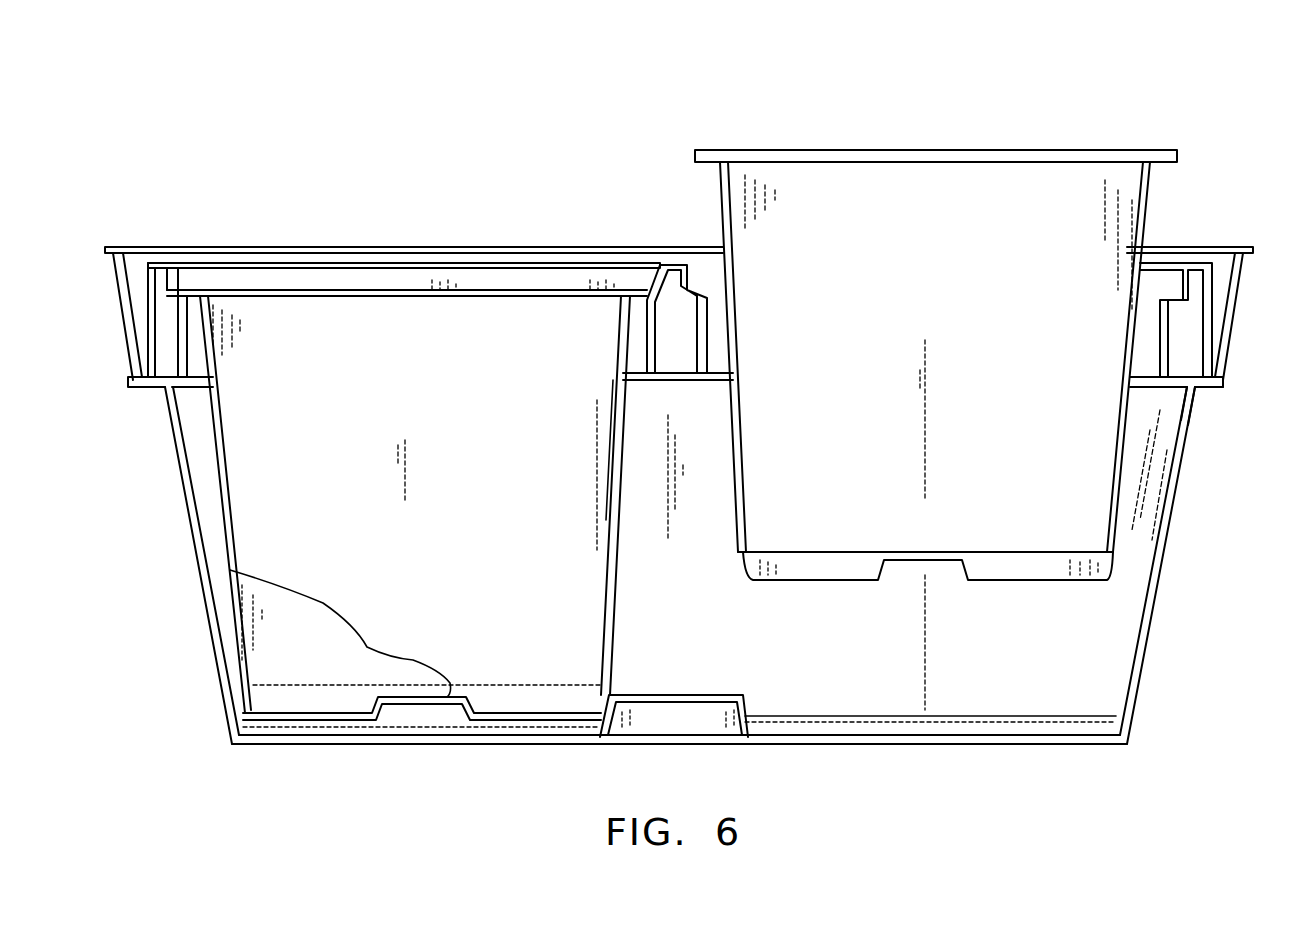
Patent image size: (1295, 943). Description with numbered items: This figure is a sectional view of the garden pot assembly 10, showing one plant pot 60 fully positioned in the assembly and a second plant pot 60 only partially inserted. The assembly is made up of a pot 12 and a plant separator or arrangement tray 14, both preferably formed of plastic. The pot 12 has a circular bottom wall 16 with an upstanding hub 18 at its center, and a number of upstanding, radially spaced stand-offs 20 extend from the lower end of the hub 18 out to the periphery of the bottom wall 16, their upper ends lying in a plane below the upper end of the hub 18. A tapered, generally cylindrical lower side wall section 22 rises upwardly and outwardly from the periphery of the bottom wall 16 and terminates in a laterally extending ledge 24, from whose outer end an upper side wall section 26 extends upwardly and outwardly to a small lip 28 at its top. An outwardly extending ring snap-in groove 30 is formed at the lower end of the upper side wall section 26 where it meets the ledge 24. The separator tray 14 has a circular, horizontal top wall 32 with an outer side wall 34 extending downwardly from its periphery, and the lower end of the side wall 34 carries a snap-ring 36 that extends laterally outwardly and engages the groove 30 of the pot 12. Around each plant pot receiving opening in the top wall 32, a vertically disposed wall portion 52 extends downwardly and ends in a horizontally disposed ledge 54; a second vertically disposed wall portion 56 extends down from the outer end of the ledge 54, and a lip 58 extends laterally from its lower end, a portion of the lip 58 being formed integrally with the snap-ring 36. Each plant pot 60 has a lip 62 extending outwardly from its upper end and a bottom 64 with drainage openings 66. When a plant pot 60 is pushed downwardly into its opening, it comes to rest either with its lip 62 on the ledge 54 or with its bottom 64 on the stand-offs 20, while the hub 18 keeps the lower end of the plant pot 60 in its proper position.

The garden pot assembly 10 is at (1193, 187).
The pot 12 is at (1170, 560).
The plant separator or arrangement tray 14 is at (1193, 250).
The bottom wall 16 is at (1002, 748).
The hub 18 is at (687, 695).
The stand-offs 20 is at (1018, 725).
The lower side wall section 22 is at (1150, 643).
The ledge 24 is at (1207, 390).
The upper side wall section 26 is at (1227, 327).
The lip 28 is at (1250, 245).
The ring snap-in groove 30 is at (1223, 383).
The top wall 32 is at (160, 262).
The outer side wall 34 is at (158, 357).
The snap-ring 36 is at (1203, 377).
The semi-circular wall portion 52 is at (652, 268).
The semi-circular ledge 54 is at (642, 323).
The semi-circular wall portion 56 is at (647, 350).
The lip 58 is at (627, 380).
The plant pot 60 is at (472, 305).
The lip 62 is at (257, 290).
The bottom 64 is at (362, 714).
The drainage openings 66 is at (313, 712).